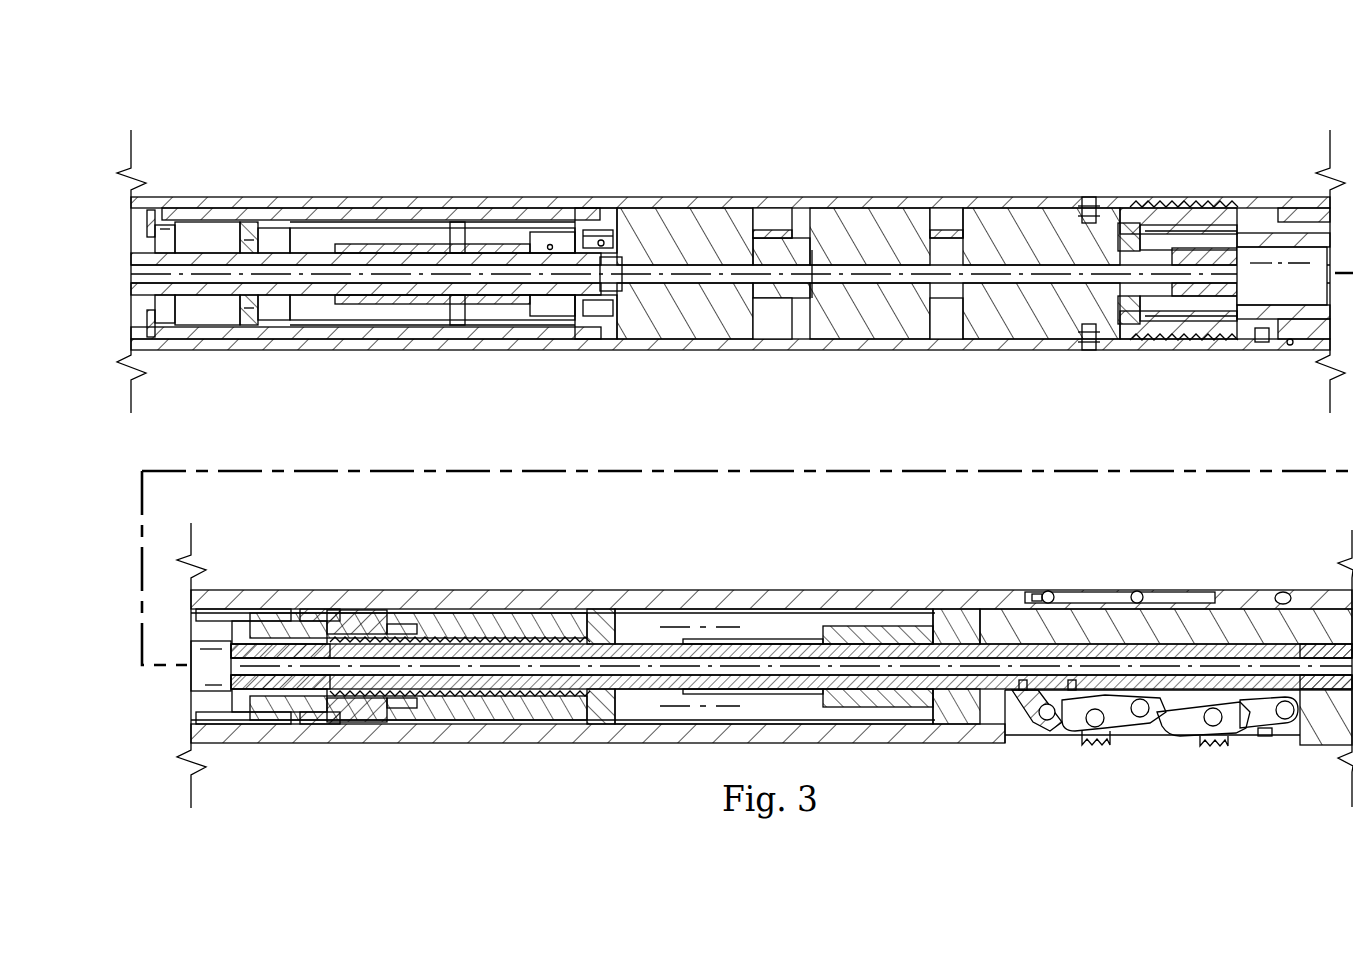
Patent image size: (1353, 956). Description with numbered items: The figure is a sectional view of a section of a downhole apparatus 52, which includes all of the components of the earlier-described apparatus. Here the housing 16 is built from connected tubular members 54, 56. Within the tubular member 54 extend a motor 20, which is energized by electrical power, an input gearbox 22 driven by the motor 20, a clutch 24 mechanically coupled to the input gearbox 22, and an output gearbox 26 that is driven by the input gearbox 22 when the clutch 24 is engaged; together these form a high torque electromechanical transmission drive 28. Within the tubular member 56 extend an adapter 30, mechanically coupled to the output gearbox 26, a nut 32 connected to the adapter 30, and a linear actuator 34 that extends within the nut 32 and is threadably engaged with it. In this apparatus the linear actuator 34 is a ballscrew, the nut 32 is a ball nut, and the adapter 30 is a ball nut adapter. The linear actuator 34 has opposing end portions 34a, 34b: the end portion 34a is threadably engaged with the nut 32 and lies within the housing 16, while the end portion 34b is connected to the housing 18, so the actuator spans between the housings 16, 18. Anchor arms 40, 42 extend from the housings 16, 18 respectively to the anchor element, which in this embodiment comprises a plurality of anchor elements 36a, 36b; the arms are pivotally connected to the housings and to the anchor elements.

The downhole apparatus 52 is at (297, 90).
The housing 16 is at (634, 351).
The housing 18 is at (1314, 745).
The motor 20 is at (393, 226).
The input gearbox 22 is at (707, 228).
The clutch 24 is at (839, 216).
The output gearbox 26 is at (1024, 226).
The high torque electromechanical transmission drive 28 is at (636, 192).
The adapter 30 is at (1268, 240).
The nut 32 is at (509, 632).
The linear actuator 34 is at (654, 632).
The end portion 34a is at (228, 666).
The end portion 34b is at (1330, 640).
The anchor element 36a is at (1100, 745).
The anchor element 36b is at (1219, 745).
The anchor arm 40 is at (1058, 735).
The anchor arm 42 is at (1262, 738).
The tubular member 54 is at (702, 351).
The tubular member 56 is at (546, 745).